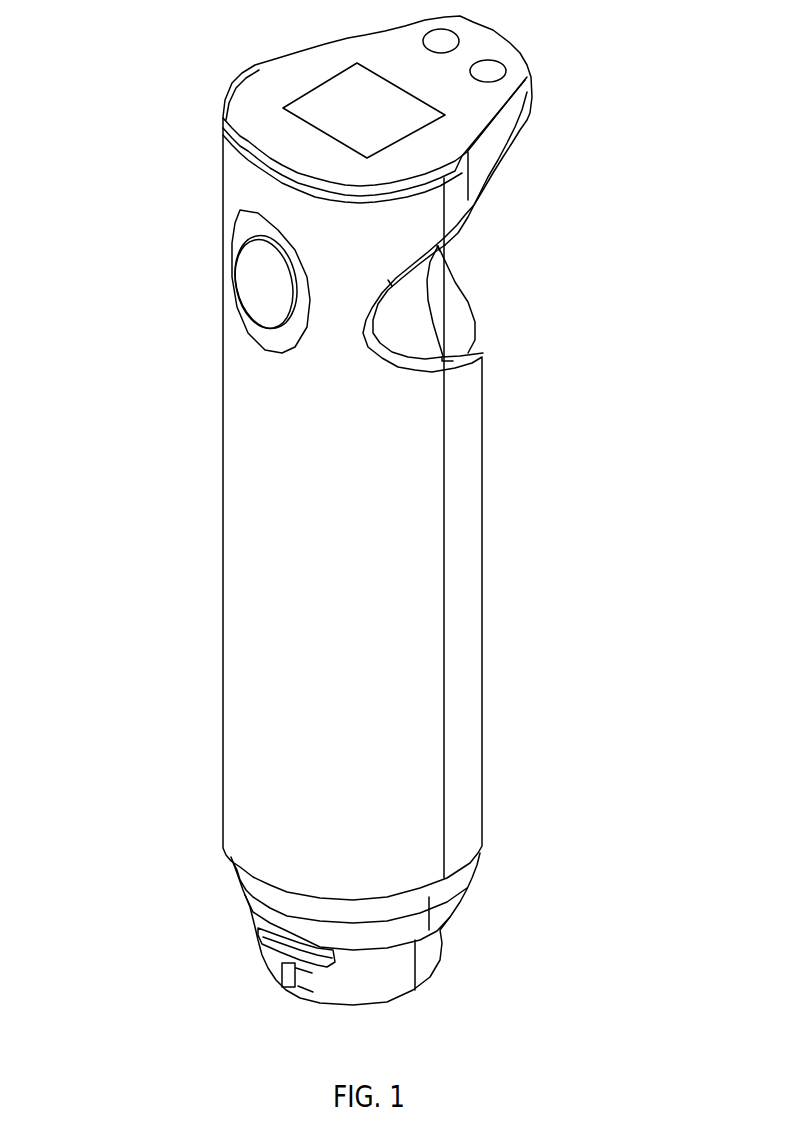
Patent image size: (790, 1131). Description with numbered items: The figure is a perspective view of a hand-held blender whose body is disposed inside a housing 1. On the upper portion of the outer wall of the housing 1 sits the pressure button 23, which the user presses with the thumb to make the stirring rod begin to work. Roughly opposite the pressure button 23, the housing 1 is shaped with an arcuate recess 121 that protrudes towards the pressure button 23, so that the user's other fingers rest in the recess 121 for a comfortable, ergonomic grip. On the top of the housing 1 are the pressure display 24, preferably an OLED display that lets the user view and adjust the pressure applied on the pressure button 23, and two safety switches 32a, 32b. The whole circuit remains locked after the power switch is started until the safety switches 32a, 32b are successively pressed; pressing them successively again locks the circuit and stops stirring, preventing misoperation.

The housing 1 is at (290, 525).
The pressure button 23 is at (258, 270).
The pressure display 24 is at (347, 98).
The safety switch 32a is at (488, 71).
The safety switch 32b is at (441, 41).
The recess 121 is at (405, 302).